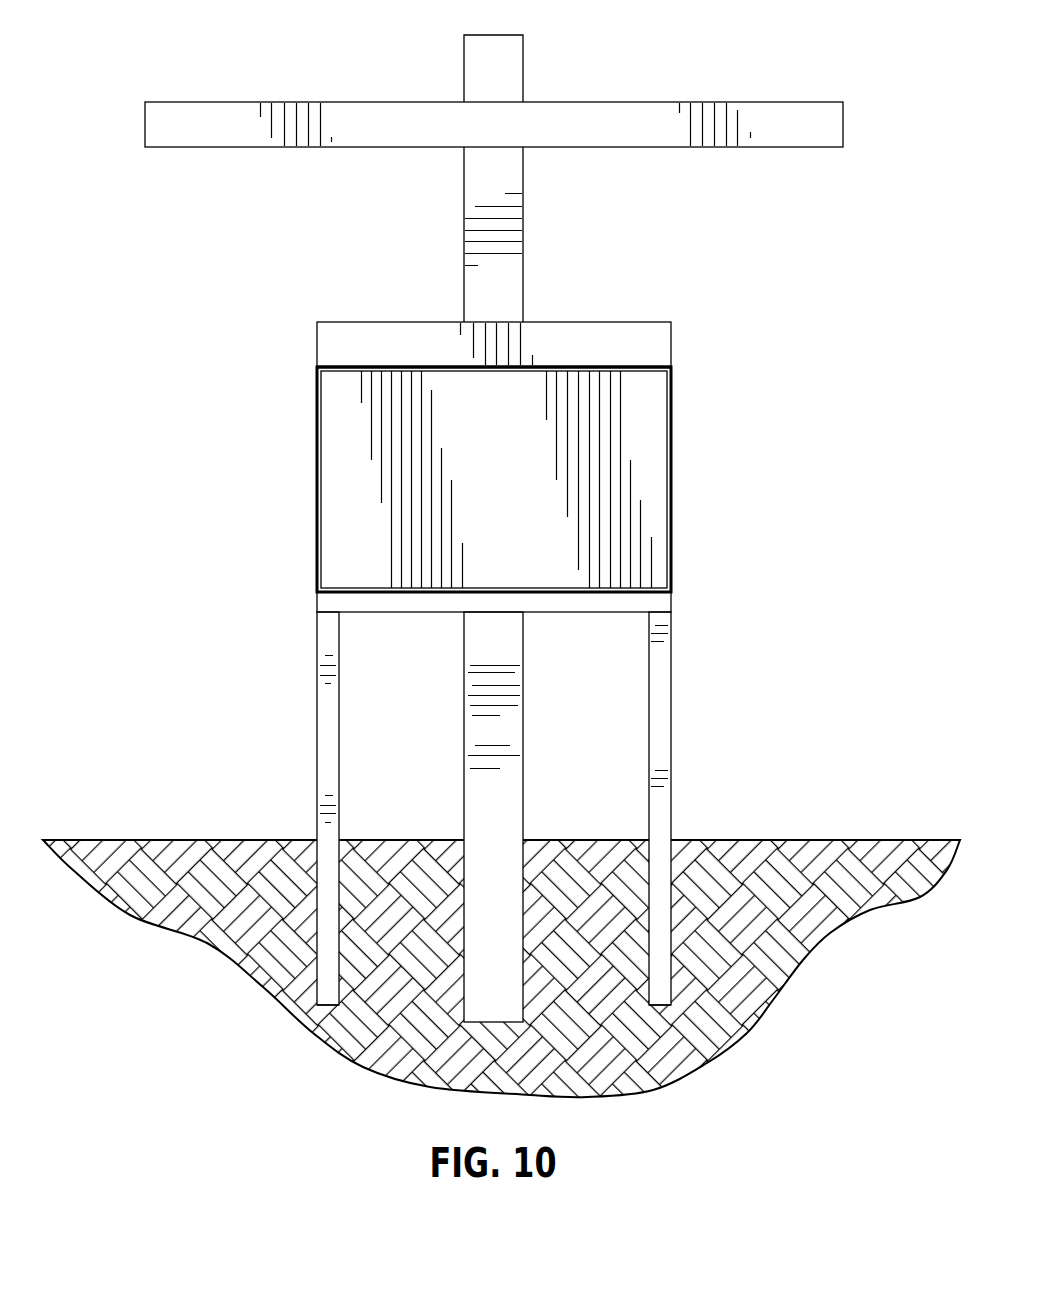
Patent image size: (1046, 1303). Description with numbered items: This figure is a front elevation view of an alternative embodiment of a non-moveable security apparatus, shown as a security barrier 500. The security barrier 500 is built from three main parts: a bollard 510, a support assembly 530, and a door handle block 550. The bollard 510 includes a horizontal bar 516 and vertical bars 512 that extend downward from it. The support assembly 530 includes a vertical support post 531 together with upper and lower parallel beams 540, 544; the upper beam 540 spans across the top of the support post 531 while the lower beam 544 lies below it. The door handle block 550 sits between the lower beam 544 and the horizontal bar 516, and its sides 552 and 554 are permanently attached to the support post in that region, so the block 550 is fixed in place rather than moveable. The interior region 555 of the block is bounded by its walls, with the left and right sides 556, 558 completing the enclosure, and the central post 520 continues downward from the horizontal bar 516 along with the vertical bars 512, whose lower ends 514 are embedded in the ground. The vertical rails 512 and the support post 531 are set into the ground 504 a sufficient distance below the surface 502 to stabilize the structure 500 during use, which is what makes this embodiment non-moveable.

The security barrier 500 is at (152, 237).
The surface 502 is at (174, 840).
The ground 504 is at (238, 942).
The bollard 510 is at (674, 714).
The vertical bars 512 is at (323, 722).
The leg ends 514 is at (325, 1010).
The horizontal bar 516 is at (319, 600).
The center post 520 is at (396, 614).
The support assembly 530 is at (267, 100).
The vertical support post 531 is at (473, 68).
The upper beam 540 is at (358, 136).
The lower beam 544 is at (660, 340).
The door handle block 550 is at (314, 437).
The side 552 is at (550, 370).
The side 554 is at (635, 584).
The interior cavity 555 is at (494, 479).
The left side wall 556 is at (314, 471).
The right side wall 558 is at (674, 480).